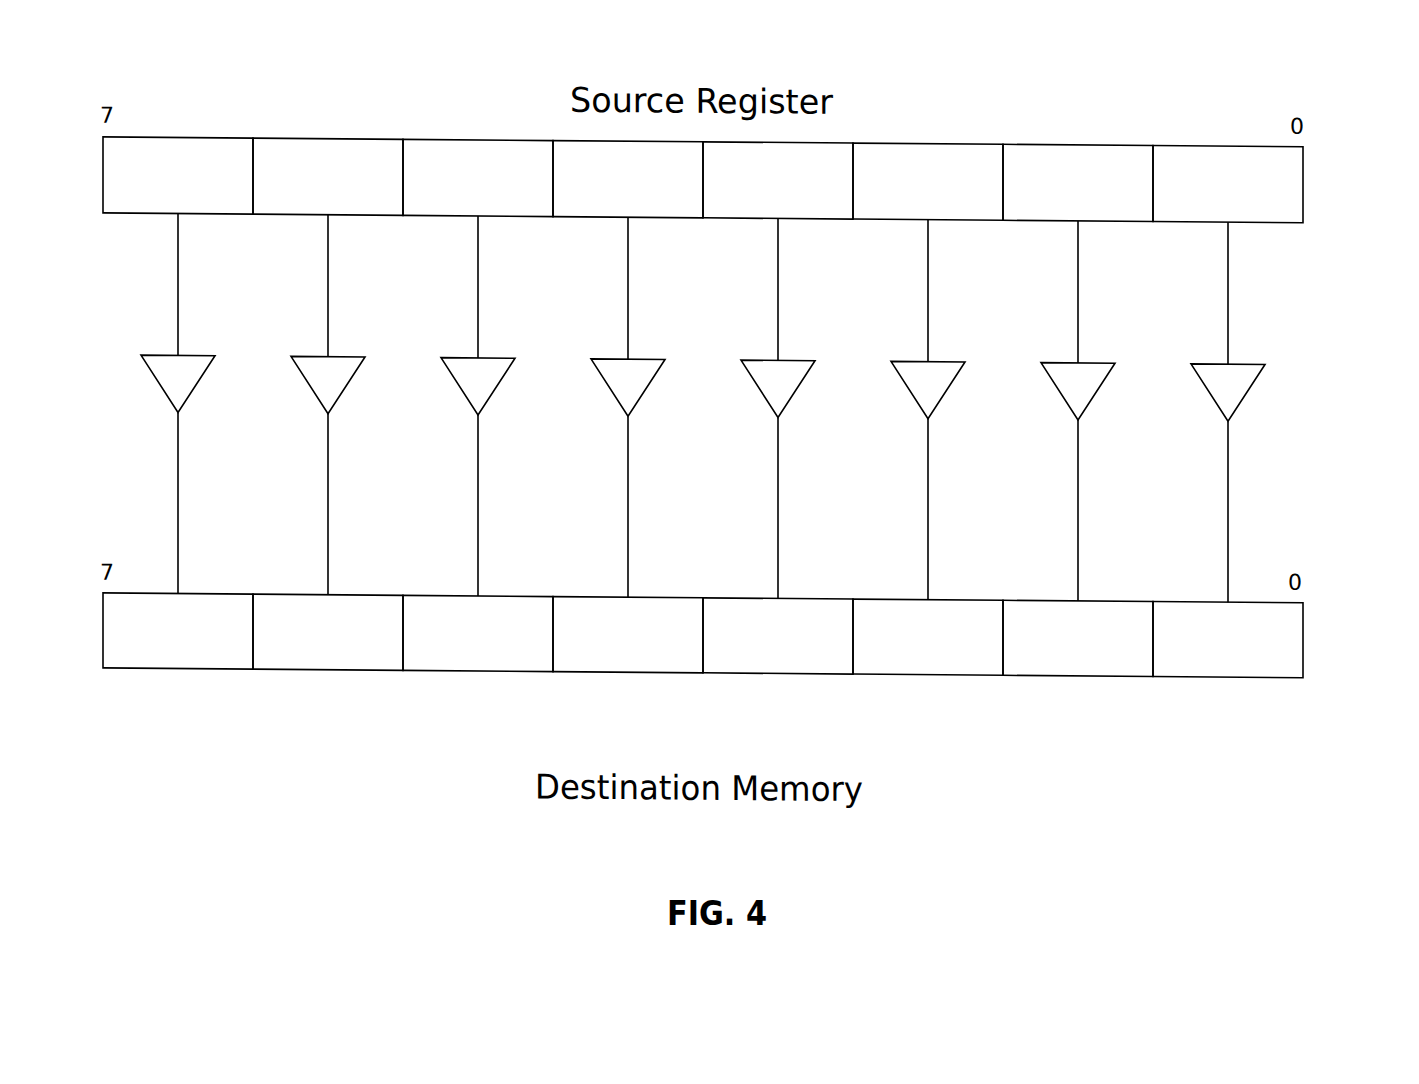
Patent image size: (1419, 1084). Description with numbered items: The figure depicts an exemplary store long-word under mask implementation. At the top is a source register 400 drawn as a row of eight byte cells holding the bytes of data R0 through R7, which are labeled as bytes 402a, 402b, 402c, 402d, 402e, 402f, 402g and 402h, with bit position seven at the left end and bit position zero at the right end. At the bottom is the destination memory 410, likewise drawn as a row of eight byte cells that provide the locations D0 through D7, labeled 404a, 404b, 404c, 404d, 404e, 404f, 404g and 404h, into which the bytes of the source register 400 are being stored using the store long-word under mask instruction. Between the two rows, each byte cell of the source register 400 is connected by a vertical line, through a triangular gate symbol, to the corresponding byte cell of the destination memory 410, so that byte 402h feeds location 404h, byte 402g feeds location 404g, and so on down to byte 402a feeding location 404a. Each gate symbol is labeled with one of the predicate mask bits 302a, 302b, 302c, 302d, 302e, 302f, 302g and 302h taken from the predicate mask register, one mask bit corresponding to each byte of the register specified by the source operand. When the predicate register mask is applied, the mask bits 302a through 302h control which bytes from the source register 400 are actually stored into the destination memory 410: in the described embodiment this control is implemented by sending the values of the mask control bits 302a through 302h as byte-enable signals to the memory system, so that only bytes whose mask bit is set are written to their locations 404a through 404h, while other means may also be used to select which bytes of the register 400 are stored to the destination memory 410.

The source register 400 is at (761, 248).
The destination memory 410 is at (759, 582).
The byte of data R0 402a is at (1275, 212).
The byte of data R1 402b is at (1125, 212).
The byte of data R2 402c is at (975, 212).
The byte of data R3 402d is at (825, 212).
The byte of data R4 402e is at (675, 212).
The byte of data R5 402f is at (525, 212).
The byte of data R6 402g is at (375, 212).
The byte of data R7 402h is at (225, 212).
The destination memory location D0 404a is at (1275, 667).
The destination memory location D1 404b is at (1125, 667).
The destination memory location D2 404c is at (975, 667).
The destination memory location D3 404d is at (825, 667).
The destination memory location D4 404e is at (675, 667).
The destination memory location D5 404f is at (525, 667).
The destination memory location D6 404g is at (375, 667).
The destination memory location D7 404h is at (225, 667).
The predicate mask bit pM0 302a is at (1210, 384).
The predicate mask bit pM1 302b is at (1060, 384).
The predicate mask bit pM2 302c is at (910, 384).
The predicate mask bit pM3 302d is at (760, 384).
The predicate mask bit pM4 302e is at (610, 384).
The predicate mask bit pM5 302f is at (460, 384).
The predicate mask bit pM6 302g is at (310, 384).
The predicate mask bit pM7 302h is at (160, 384).